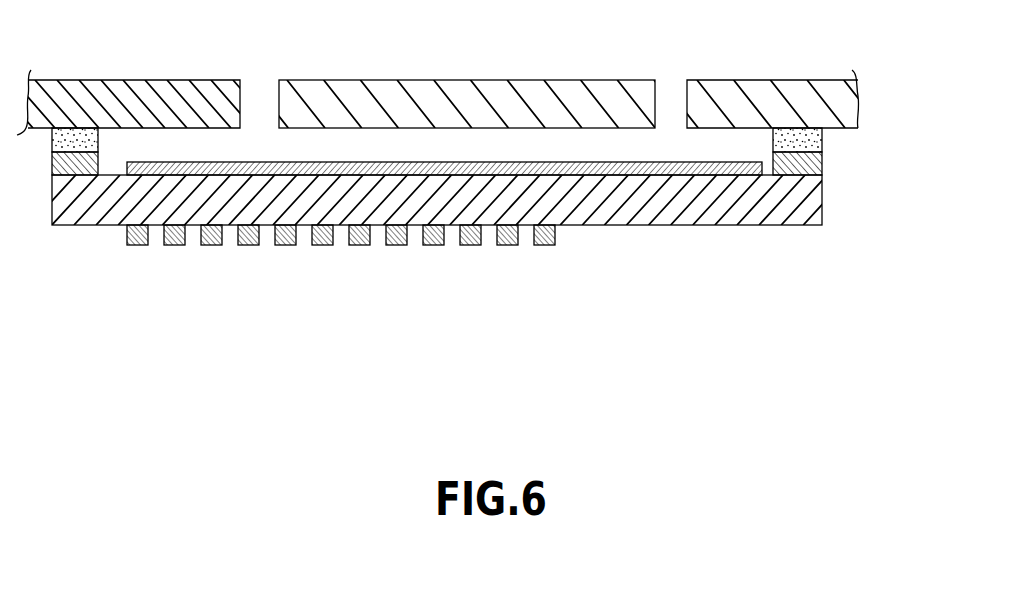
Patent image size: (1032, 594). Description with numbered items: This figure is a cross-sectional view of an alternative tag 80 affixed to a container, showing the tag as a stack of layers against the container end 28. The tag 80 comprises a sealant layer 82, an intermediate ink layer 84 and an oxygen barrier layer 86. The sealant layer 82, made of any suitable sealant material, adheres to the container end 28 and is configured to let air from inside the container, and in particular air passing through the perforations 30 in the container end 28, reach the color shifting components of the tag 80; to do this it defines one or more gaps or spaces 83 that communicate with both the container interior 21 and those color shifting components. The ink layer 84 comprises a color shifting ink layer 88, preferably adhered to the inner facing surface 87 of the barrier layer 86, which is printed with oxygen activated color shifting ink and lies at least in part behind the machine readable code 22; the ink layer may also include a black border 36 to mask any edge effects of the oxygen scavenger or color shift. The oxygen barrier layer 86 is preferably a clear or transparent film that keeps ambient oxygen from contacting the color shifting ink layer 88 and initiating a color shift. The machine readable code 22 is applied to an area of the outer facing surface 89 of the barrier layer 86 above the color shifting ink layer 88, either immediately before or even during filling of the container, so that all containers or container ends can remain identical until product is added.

The tag 80 is at (133, 293).
The container interior 21 is at (510, 53).
The machine readable code 22 is at (286, 247).
The container end 28 is at (775, 74).
The perforations 30 is at (260, 94).
The black border 36 is at (822, 171).
The sealant layer 82 is at (823, 140).
The gaps or spaces 83 is at (660, 140).
The ink layer 84 is at (823, 163).
The oxygen barrier layer 86 is at (823, 197).
The inner facing surface 87 is at (707, 175).
The color shifting ink layer 88 is at (374, 162).
The outer facing surface 89 is at (765, 226).